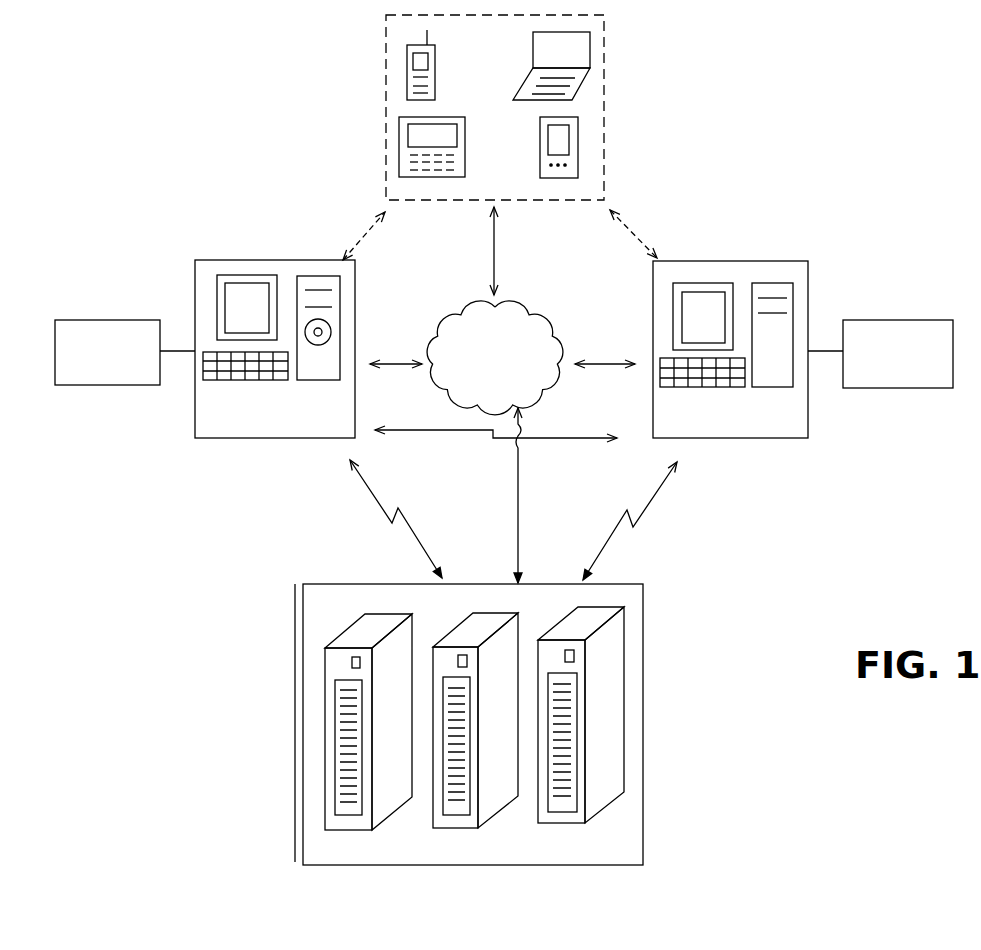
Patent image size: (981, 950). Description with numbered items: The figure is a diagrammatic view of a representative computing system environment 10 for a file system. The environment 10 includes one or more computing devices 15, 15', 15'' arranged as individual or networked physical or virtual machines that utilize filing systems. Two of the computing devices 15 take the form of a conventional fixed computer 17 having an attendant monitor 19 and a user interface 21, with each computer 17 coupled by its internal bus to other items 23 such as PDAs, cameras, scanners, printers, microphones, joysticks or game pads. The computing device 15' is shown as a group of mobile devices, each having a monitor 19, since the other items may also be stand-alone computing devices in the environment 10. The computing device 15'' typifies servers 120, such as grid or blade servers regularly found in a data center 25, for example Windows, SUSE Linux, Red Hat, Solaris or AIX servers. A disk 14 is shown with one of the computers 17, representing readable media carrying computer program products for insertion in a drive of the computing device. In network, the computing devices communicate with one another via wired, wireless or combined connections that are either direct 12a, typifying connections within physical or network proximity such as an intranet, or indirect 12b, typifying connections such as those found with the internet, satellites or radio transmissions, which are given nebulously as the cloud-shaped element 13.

The computing system environment 10 is at (87, 137).
The direct connection 12a is at (360, 237).
The indirect connection 12b is at (494, 252).
The indirect connection element 13 is at (543, 318).
The disk 14 is at (331, 324).
The computing device 15 is at (501, 330).
The computing device 15' is at (524, 107).
The computing device 15'' is at (490, 724).
The computer 17 is at (318, 380).
The monitor 19 is at (537, 53).
The user interface 21 is at (227, 380).
The other 23 is at (102, 320).
The data center 25 is at (485, 867).
The server 120 is at (372, 615).